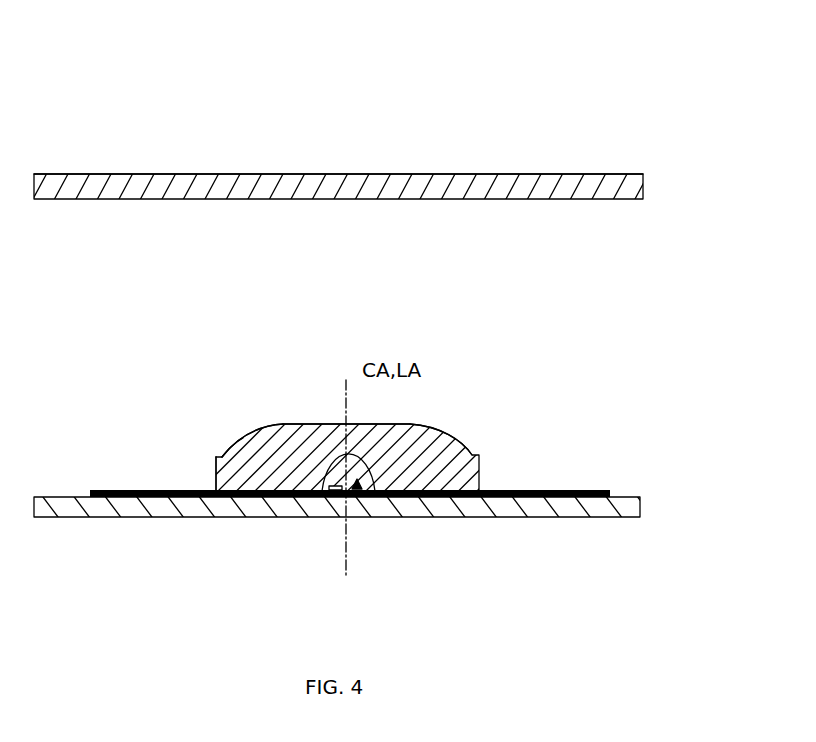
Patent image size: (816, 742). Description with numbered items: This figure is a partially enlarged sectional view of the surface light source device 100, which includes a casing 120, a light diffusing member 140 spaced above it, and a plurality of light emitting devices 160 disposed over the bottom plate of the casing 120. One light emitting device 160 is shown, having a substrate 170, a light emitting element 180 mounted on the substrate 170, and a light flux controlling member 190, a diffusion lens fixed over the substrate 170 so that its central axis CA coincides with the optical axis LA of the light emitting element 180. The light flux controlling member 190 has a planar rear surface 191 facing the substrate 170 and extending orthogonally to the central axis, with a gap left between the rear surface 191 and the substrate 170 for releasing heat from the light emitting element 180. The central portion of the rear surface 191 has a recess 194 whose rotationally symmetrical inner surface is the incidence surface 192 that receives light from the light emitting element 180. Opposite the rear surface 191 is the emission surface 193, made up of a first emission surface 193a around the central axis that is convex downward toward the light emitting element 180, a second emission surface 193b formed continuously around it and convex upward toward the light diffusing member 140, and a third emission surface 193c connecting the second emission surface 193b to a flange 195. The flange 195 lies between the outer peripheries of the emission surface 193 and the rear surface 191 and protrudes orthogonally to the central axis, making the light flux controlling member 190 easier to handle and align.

The surface light source device 100 is at (593, 81).
The casing 120 is at (597, 506).
The light diffusing member 140 is at (98, 180).
The light emitting device 160 is at (471, 302).
The substrate 170 is at (488, 498).
The light emitting element 180 is at (332, 497).
The light flux controlling member 190 is at (453, 440).
The rear surface 191 is at (262, 517).
The incidence surface 192 is at (380, 497).
The emission surface 193 is at (290, 334).
The first emission surface 193a is at (340, 425).
The second emission surface 193b is at (263, 427).
The third emission surface 193c is at (227, 450).
The recess 194 is at (357, 494).
The flange 195 is at (215, 470).